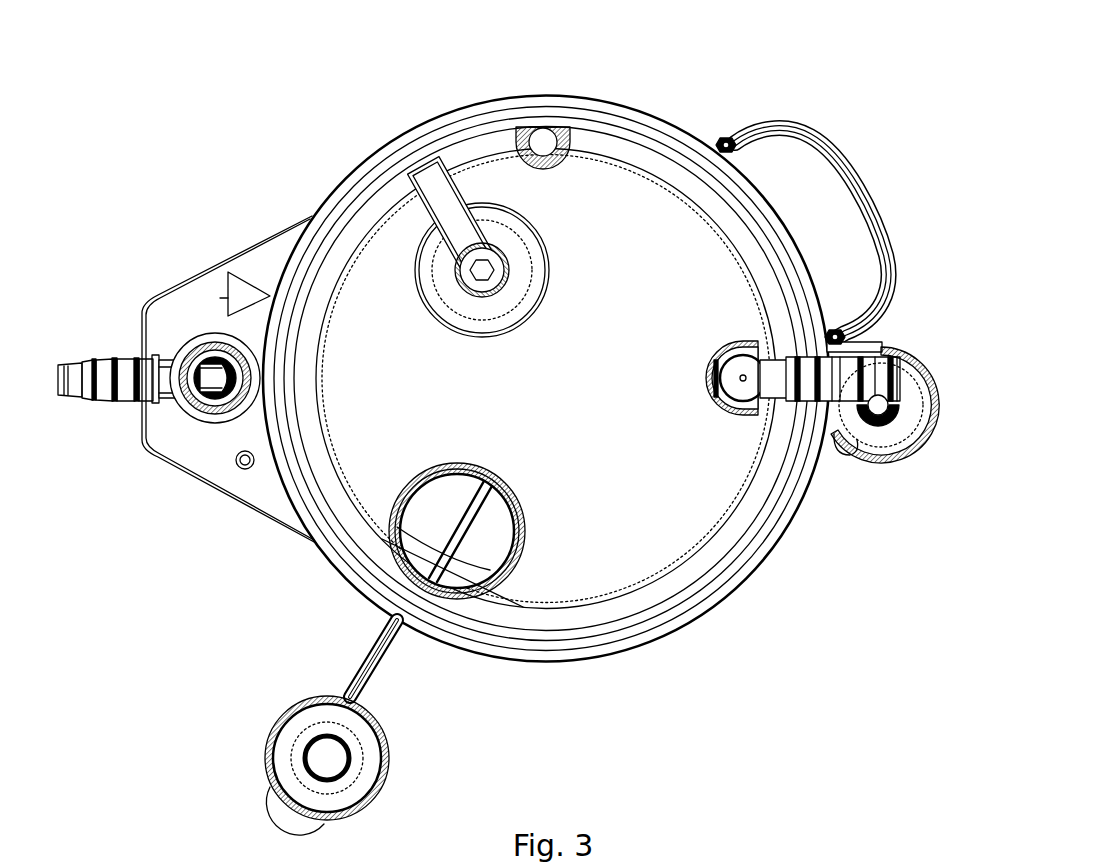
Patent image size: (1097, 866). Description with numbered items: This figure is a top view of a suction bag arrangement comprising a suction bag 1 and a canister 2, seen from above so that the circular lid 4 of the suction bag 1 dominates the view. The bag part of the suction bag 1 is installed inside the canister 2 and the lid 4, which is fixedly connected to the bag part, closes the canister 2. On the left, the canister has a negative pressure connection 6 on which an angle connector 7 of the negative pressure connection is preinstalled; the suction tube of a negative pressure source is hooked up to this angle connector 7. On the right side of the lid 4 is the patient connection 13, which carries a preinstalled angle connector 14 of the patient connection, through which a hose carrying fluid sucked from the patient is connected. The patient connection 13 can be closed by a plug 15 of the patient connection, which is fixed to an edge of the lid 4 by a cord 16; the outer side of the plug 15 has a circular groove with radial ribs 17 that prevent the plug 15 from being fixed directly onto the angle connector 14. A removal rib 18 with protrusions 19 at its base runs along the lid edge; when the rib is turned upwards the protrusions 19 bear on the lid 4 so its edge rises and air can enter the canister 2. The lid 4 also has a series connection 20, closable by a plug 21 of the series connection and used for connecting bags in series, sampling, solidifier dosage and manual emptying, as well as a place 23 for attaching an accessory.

The suction bag 1 is at (486, 185).
The canister 2 is at (254, 266).
The lid 4 is at (600, 190).
The negative pressure connection 6 is at (183, 332).
The angle connector of the negative pressure connection 7 is at (105, 376).
The patient connection 13 is at (716, 378).
The angle connector of the patient connection 14 is at (893, 340).
The plug of the patient connection 15 is at (870, 430).
The cord 16 is at (895, 463).
The ribs 17 is at (875, 424).
The removal rib 18 is at (862, 187).
The protrusions 19 is at (727, 137).
The series connection 20 is at (463, 549).
The plug of the series connection 21 is at (330, 757).
The place for attaching an accessory 23 is at (545, 128).